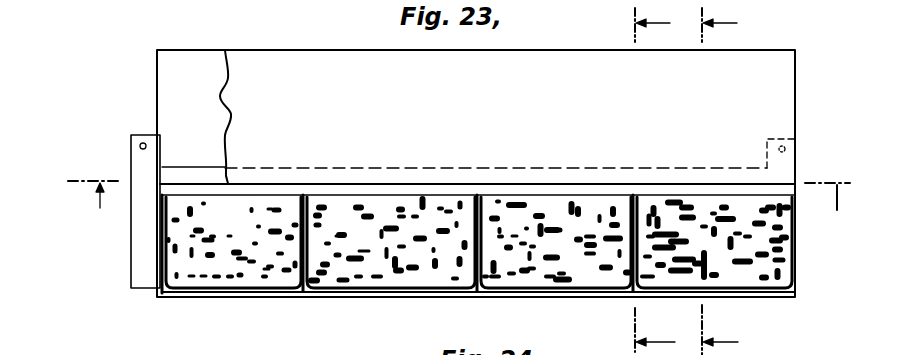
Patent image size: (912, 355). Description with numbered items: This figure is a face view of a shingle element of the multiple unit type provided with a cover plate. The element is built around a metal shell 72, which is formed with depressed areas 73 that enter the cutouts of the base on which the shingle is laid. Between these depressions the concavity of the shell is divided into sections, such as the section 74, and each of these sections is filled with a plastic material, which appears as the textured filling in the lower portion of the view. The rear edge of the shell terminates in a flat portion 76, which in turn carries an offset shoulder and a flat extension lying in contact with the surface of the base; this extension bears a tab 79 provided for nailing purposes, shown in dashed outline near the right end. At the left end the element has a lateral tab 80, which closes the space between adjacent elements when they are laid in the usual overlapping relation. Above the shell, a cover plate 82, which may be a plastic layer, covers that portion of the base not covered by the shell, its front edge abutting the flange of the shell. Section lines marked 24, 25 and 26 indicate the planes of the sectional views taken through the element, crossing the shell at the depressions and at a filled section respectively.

The cover plate 82 is at (768, 98).
The tab 79 is at (782, 165).
The flat portion 76 is at (377, 188).
The lateral tab 80 is at (135, 245).
The section of the concavity 74 is at (348, 267).
The depressed area 73 is at (630, 290).
The metal shell 72 is at (765, 278).
The section line 24- 24 is at (465, 200).
The section line 25- 25 is at (723, 177).
The section line 26- 26 is at (656, 176).